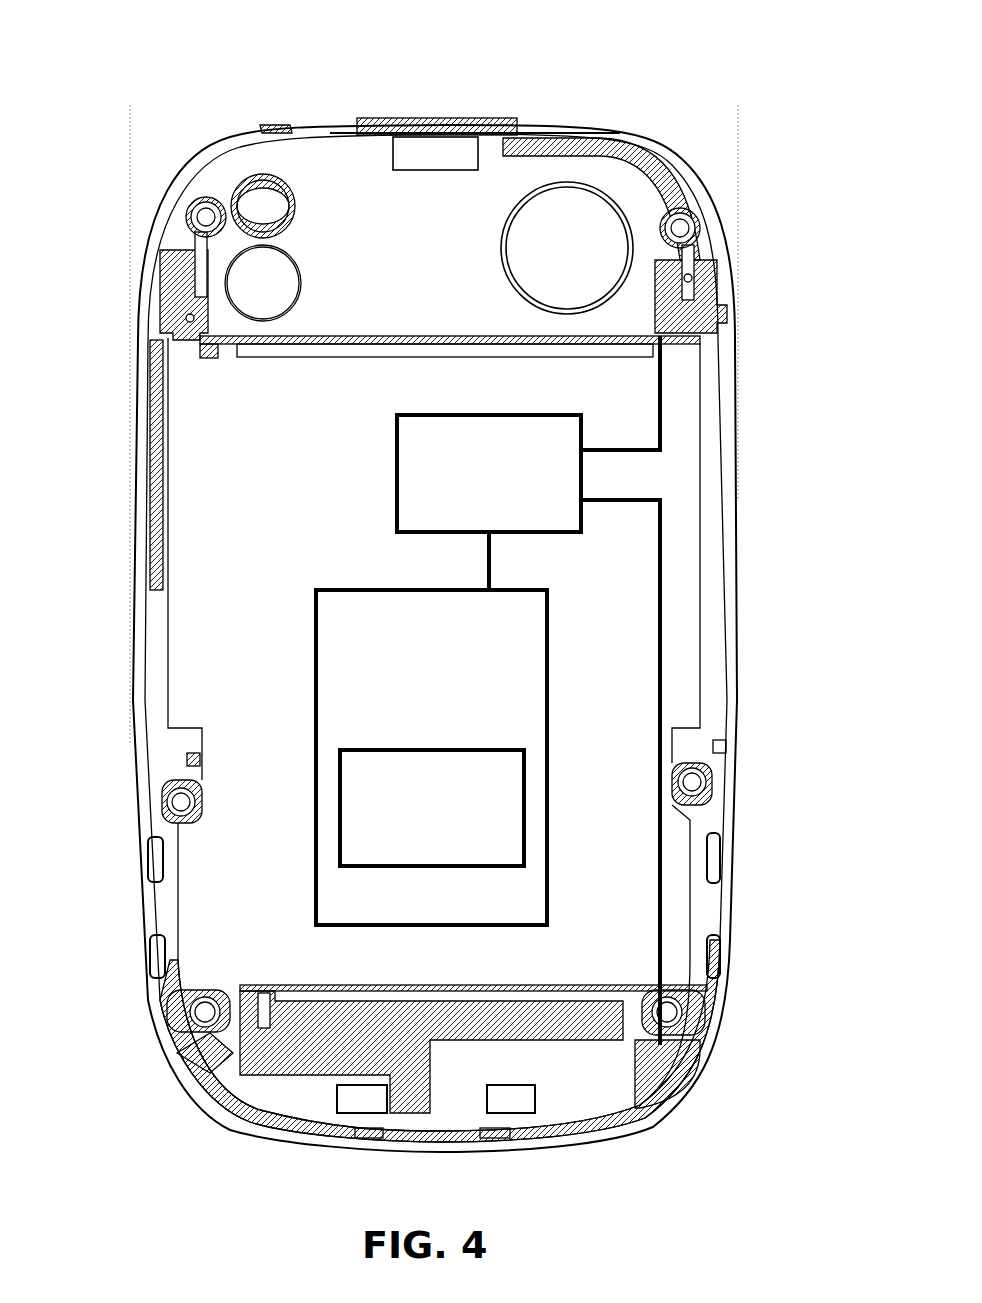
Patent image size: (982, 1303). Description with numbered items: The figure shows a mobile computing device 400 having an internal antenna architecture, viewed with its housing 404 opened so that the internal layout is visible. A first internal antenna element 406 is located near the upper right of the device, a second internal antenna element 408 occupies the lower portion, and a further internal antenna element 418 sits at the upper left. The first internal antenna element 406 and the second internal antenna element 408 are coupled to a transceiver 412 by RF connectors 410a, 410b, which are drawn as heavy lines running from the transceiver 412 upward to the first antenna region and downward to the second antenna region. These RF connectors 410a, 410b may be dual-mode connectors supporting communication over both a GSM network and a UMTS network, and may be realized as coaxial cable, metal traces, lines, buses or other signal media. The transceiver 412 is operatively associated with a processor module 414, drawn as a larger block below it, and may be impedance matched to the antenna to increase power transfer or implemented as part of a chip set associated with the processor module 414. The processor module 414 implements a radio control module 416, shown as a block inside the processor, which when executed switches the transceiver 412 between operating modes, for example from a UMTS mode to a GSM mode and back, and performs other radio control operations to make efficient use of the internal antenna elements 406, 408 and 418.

The mobile computing device 400 is at (795, 68).
The housing 404 is at (130, 662).
The first internal antenna element 406 is at (738, 278).
The second internal antenna element 408 is at (255, 985).
The RF connector 410a is at (660, 398).
The RF connector 410b is at (663, 543).
The transceiver module 412 is at (489, 502).
The processor module 414 is at (431, 757).
The radio control module 416 is at (432, 808).
The internal antenna element 418 is at (160, 338).